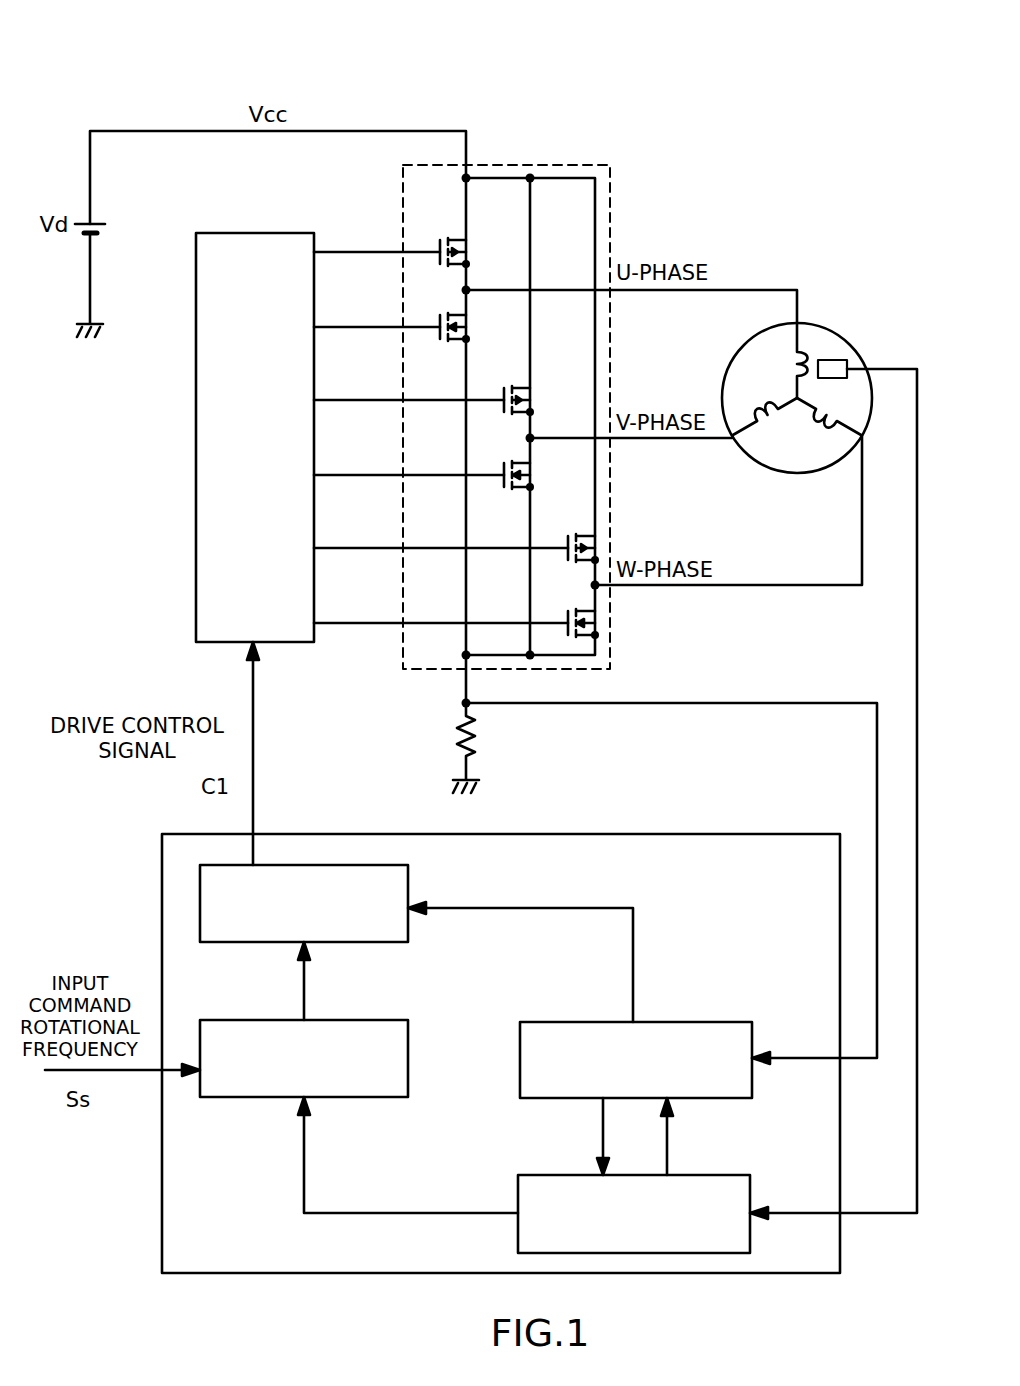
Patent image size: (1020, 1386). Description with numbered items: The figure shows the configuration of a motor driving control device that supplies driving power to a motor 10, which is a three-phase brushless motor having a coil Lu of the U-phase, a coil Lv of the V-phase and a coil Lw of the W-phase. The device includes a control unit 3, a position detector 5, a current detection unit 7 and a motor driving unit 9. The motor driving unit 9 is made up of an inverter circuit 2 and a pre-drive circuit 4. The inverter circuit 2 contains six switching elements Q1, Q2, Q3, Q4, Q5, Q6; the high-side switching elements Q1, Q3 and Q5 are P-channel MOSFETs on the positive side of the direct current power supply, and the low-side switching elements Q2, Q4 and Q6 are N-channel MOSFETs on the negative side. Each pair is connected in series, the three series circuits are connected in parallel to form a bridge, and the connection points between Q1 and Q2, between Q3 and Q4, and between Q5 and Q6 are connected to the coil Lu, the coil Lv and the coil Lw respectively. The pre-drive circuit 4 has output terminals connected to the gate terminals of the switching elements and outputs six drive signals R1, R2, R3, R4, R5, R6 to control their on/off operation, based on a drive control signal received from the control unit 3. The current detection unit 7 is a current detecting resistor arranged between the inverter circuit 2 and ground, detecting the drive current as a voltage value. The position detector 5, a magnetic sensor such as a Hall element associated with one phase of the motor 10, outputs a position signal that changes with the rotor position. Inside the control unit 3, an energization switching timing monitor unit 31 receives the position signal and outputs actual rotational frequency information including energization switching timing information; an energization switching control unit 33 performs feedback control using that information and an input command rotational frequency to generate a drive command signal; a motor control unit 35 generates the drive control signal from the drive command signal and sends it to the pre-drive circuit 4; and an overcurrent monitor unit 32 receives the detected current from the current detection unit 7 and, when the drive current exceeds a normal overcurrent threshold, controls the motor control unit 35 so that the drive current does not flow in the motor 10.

The inverter circuit 2 is at (400, 654).
The control unit 3 is at (735, 833).
The pre-drive circuit 4 is at (305, 644).
The position detector 5 is at (847, 364).
The current detection unit 7 is at (478, 730).
The motor driving unit 9 is at (402, 727).
The motor 10 is at (806, 398).
The energization switching timing monitor unit 31 is at (752, 1200).
The overcurrent monitor unit 32 is at (754, 1048).
The energization switching control unit 33 is at (410, 1048).
The motor control unit 35 is at (410, 890).
The switching element Q1 is at (441, 238).
The switching element Q2 is at (441, 313).
The switching element Q3 is at (506, 386).
The switching element Q4 is at (506, 461).
The switching element Q5 is at (570, 534).
The switching element Q6 is at (570, 609).
The drive signal R1 is at (362, 246).
The drive signal R2 is at (362, 321).
The drive signal R3 is at (362, 394).
The drive signal R4 is at (362, 469).
The drive signal R5 is at (362, 542).
The drive signal R6 is at (362, 617).
The coil of U-phase Lu is at (792, 354).
The coil of V-phase Lv is at (764, 428).
The coil of W-phase Lw is at (828, 440).